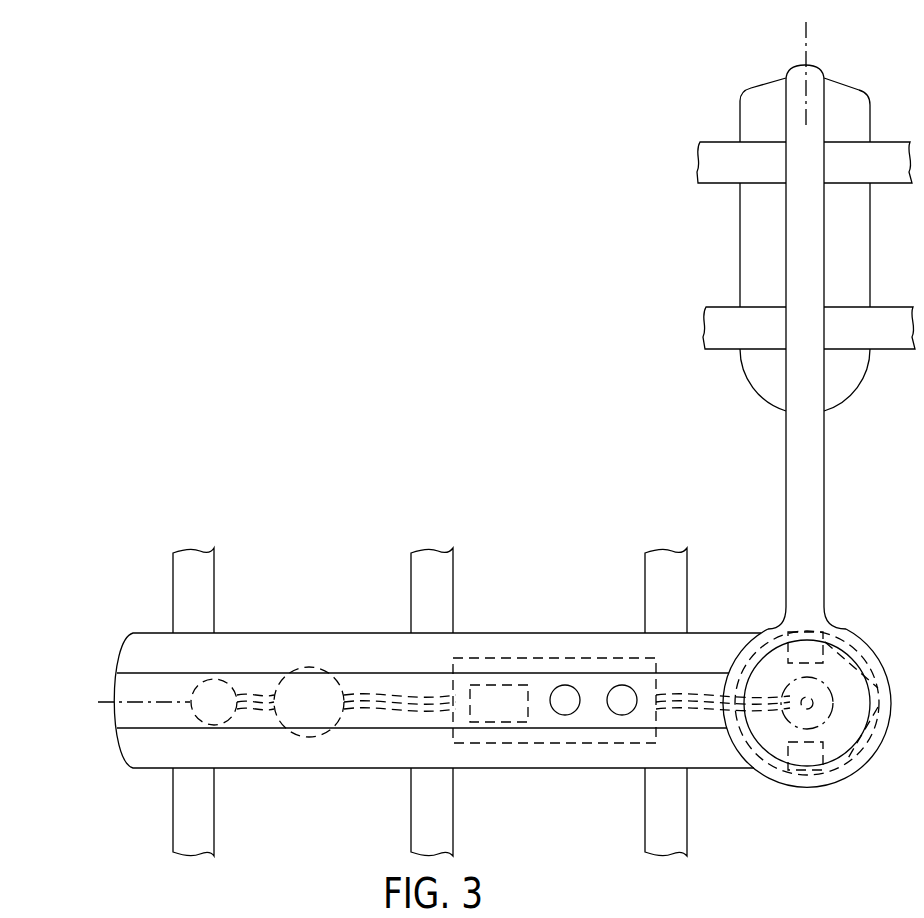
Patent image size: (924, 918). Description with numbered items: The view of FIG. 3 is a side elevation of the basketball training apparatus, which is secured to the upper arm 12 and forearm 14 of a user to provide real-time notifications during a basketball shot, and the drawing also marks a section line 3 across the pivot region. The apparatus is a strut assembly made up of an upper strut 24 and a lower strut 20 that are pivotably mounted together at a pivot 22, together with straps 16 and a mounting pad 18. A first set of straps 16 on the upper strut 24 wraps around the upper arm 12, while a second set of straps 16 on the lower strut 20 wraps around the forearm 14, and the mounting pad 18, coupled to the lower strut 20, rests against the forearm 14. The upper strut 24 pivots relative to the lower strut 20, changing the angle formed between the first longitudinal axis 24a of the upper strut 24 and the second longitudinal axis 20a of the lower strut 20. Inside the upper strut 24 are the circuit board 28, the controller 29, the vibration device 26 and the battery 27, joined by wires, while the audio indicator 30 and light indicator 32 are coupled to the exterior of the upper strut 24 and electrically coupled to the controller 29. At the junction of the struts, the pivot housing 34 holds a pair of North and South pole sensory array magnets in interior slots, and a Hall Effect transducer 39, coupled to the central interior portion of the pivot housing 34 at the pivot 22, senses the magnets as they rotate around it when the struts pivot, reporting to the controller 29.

The section line 3- 3 is at (884, 693).
The upper arm 12 is at (303, 517).
The forearm 14 is at (707, 246).
The strap 16 is at (710, 142).
The mounting pad 18 is at (871, 251).
The lower strut 20 is at (824, 511).
The second longitudinal axis 20a is at (807, 56).
The pivot 22 is at (805, 703).
The upper strut 24 is at (255, 770).
The first longitudinal axis 24a is at (152, 700).
The vibration device 26 is at (312, 668).
The battery 27 is at (222, 682).
The circuit board 28 is at (560, 657).
The controller 29 is at (498, 724).
The audio indicator 30 is at (563, 716).
The light indicator 32 is at (620, 716).
The pivot housing 34 is at (773, 609).
The Hall Effect transducer 39 is at (790, 722).